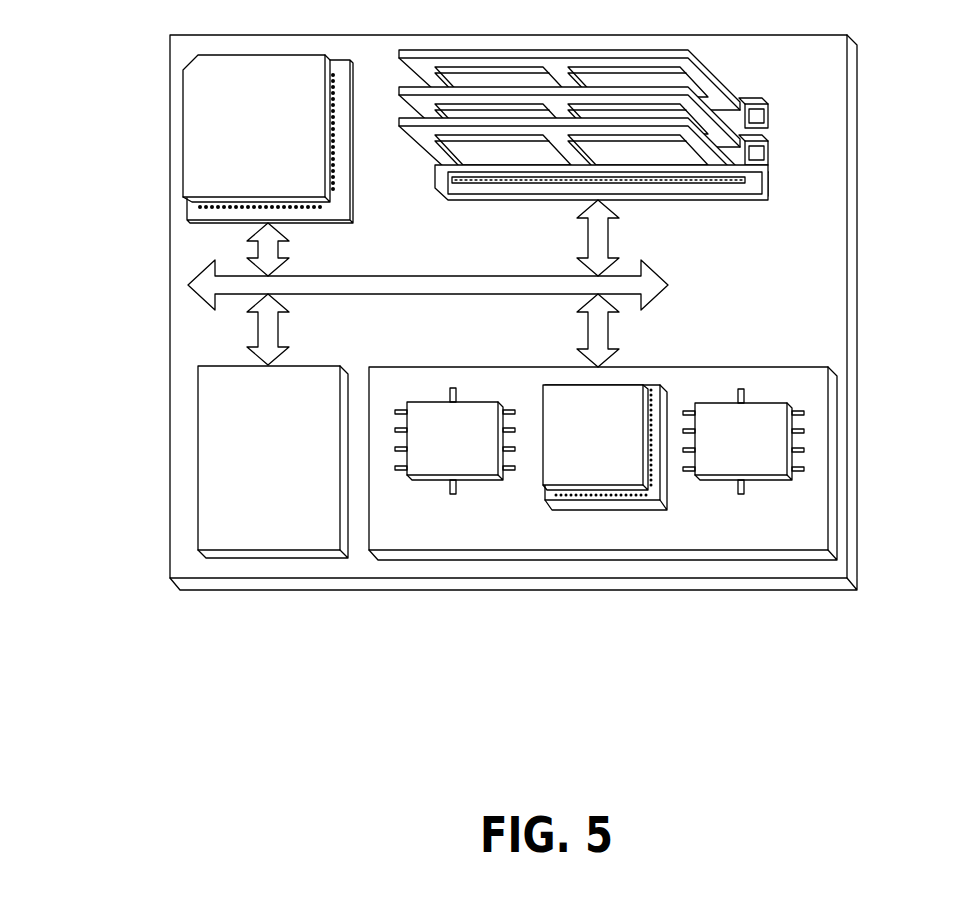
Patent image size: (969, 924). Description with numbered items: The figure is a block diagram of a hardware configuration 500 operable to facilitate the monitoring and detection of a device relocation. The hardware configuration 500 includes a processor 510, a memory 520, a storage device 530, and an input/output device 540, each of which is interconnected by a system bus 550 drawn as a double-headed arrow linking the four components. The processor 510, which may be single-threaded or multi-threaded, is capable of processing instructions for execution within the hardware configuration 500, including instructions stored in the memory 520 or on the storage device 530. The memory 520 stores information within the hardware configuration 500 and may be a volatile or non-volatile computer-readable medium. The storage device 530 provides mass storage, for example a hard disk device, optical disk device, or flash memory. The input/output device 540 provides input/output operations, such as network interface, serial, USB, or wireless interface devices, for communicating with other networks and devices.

The hardware configuration 500 is at (148, 703).
The processor 510 is at (315, 187).
The memory 520 is at (735, 90).
The storage device 530 is at (327, 545).
The input/output device 540 is at (795, 365).
The system bus 550 is at (425, 295).